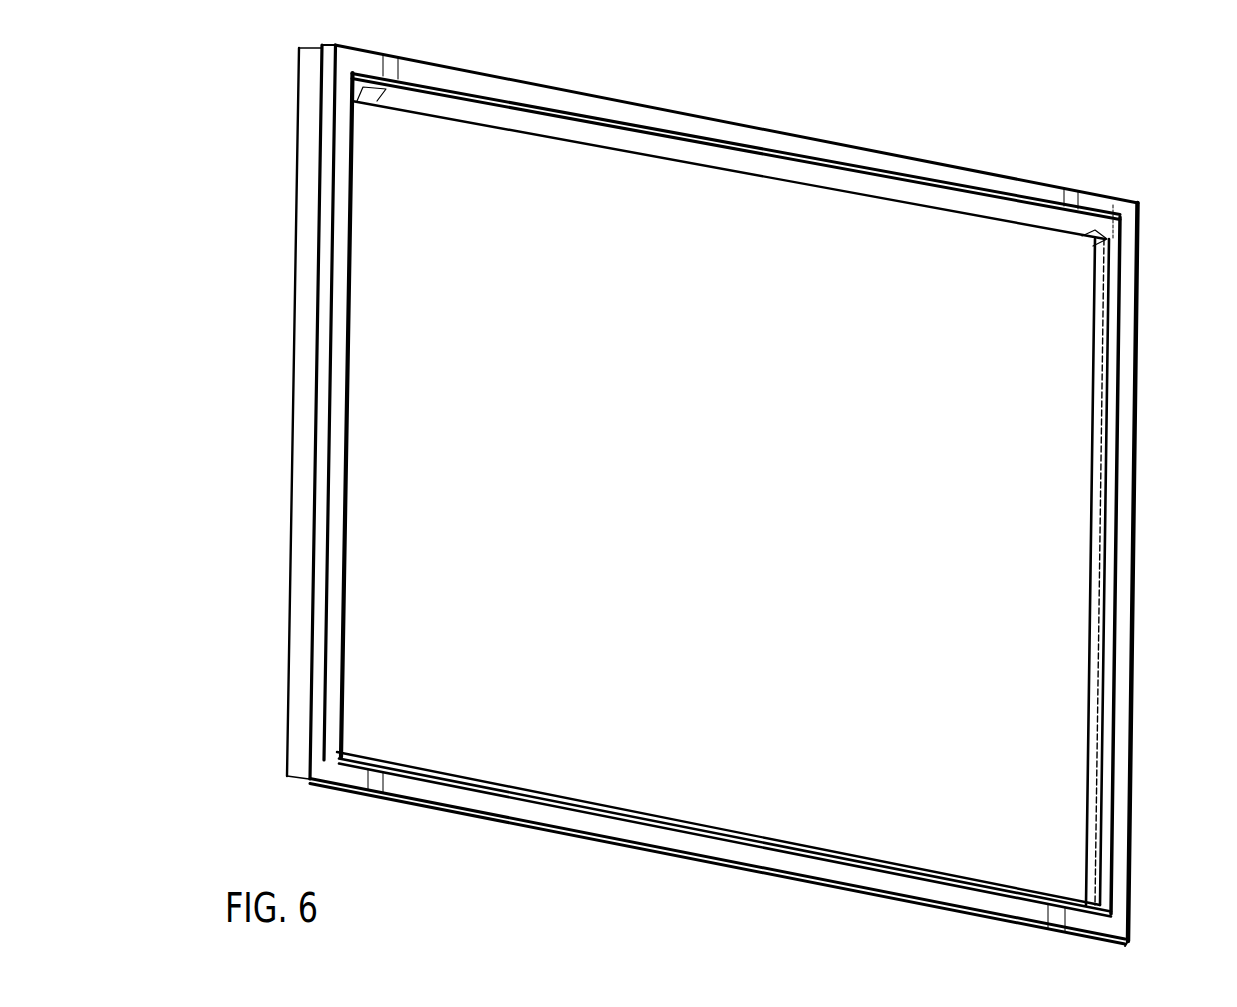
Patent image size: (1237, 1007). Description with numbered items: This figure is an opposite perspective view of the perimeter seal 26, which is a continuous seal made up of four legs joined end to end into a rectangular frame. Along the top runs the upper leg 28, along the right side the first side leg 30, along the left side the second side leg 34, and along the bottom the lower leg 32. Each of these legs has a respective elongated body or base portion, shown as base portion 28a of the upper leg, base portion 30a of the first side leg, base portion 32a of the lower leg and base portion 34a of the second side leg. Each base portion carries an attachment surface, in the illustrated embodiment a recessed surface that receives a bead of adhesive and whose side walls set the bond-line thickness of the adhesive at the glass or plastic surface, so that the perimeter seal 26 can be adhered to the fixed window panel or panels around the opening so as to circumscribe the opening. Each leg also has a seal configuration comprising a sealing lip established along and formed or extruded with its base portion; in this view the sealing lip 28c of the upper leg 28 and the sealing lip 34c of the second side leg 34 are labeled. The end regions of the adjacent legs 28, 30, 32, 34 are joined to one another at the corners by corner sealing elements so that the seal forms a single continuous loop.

The perimeter seal 26 is at (709, 487).
The upper leg 28 is at (736, 137).
The base portion 28a is at (863, 158).
The sealing lip 28c is at (680, 160).
The first side leg 30 is at (1113, 574).
The base portion 30a is at (1138, 432).
The lower leg 32 is at (717, 810).
The base portion 32a is at (705, 845).
The second side leg 34 is at (305, 412).
The base portion 34a is at (343, 525).
The sealing lip 34c is at (302, 410).